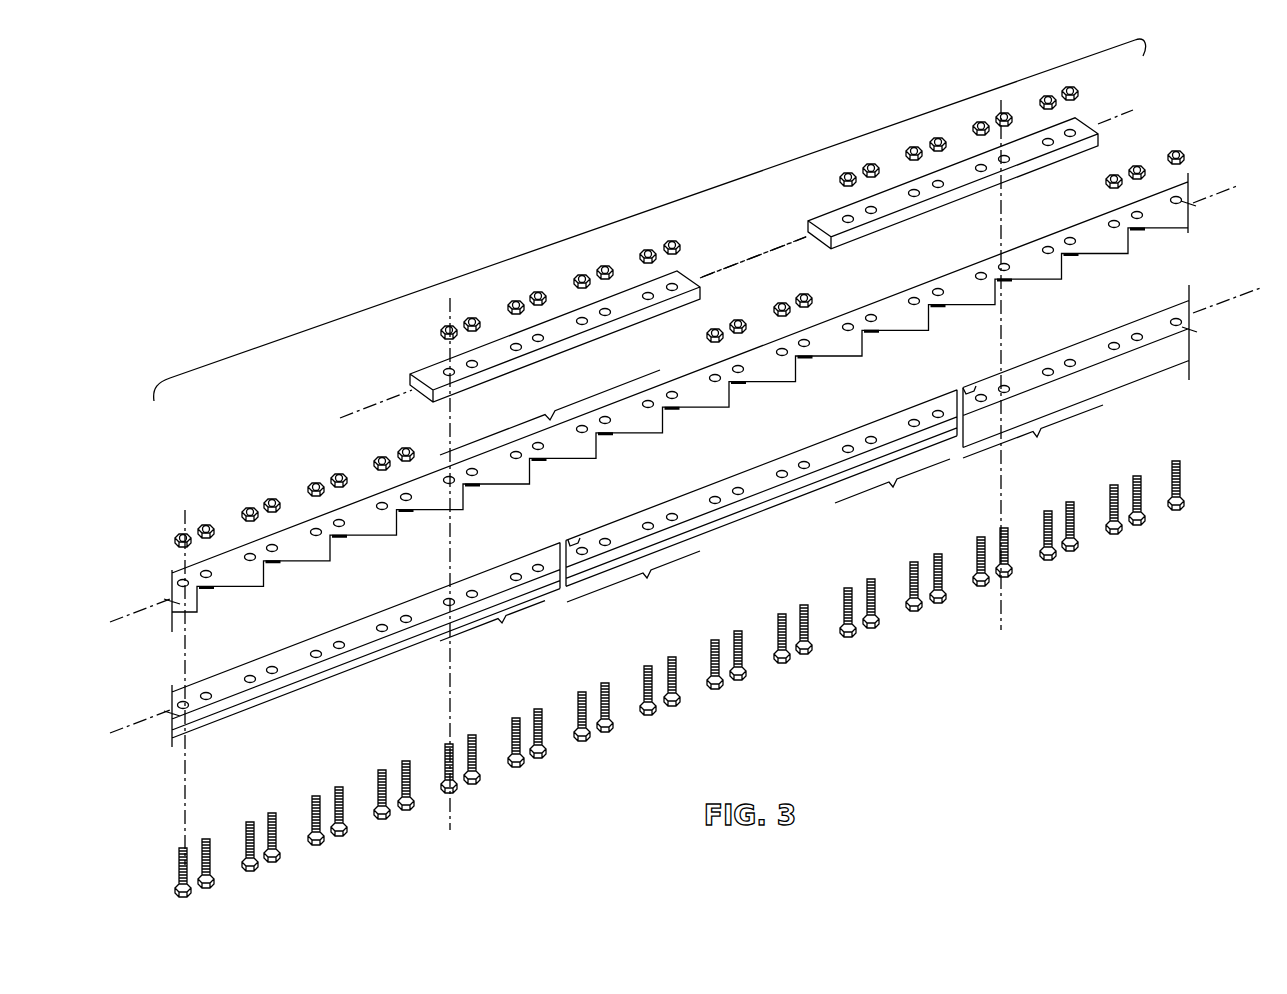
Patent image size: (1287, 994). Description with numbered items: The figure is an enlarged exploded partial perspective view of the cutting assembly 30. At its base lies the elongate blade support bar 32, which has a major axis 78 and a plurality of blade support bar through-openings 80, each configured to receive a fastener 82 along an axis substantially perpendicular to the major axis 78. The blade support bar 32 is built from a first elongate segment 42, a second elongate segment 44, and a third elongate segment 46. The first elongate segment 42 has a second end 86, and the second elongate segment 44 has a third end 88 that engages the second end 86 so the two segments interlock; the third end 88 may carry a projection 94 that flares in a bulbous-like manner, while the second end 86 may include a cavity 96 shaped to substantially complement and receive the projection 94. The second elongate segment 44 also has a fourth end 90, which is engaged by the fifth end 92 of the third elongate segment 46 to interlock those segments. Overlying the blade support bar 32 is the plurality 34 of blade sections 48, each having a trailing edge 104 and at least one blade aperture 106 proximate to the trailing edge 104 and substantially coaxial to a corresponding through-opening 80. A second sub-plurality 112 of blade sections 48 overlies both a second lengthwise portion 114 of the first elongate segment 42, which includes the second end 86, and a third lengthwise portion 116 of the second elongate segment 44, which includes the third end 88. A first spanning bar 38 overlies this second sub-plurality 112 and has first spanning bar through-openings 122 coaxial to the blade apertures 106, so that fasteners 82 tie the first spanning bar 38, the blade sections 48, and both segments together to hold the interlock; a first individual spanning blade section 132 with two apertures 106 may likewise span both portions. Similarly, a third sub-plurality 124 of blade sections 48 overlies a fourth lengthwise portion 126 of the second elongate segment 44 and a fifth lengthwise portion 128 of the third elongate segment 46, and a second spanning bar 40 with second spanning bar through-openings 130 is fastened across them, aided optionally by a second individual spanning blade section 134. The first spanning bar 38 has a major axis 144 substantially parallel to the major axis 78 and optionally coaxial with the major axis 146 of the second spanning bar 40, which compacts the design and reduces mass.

The cutting assembly 30 is at (243, 240).
The elongate blade support bar 32 is at (437, 625).
The plurality of blade sections 34 is at (655, 208).
The first spanning bar 38 is at (936, 191).
The second spanning bar 40 is at (538, 338).
The first elongate segment 42 is at (1173, 360).
The second elongate segment 44 is at (675, 516).
The third elongate segment 46 is at (365, 652).
The blade section 48 is at (242, 583).
The major axis 78 is at (1227, 295).
The blade support bar through-opening 80 is at (181, 702).
The fastener 82 is at (172, 887).
The second end 86 is at (960, 450).
The third end 88 is at (952, 395).
The fourth end 90 is at (566, 590).
The fifth end 92 is at (566, 546).
The projection 94 is at (963, 392).
The cavity 96 is at (982, 403).
The trailing edge 104 is at (287, 530).
The blade aperture 106 is at (207, 577).
The second sub-plurality of blade sections 112 is at (707, 378).
The second lengthwise portion 114 is at (1033, 437).
The third lengthwise portion 116 is at (892, 483).
The first spanning bar through-opening 122 is at (843, 213).
The third sub-plurality of blade sections 124 is at (550, 412).
The fourth lengthwise portion 126 is at (761, 500).
The fifth lengthwise portion 128 is at (362, 645).
The second spanning bar through-opening 130 is at (446, 368).
The first individual spanning blade section 132 is at (985, 292).
The second individual spanning blade section 134 is at (578, 447).
The major axis 144 is at (762, 252).
The major axis 146 is at (358, 409).